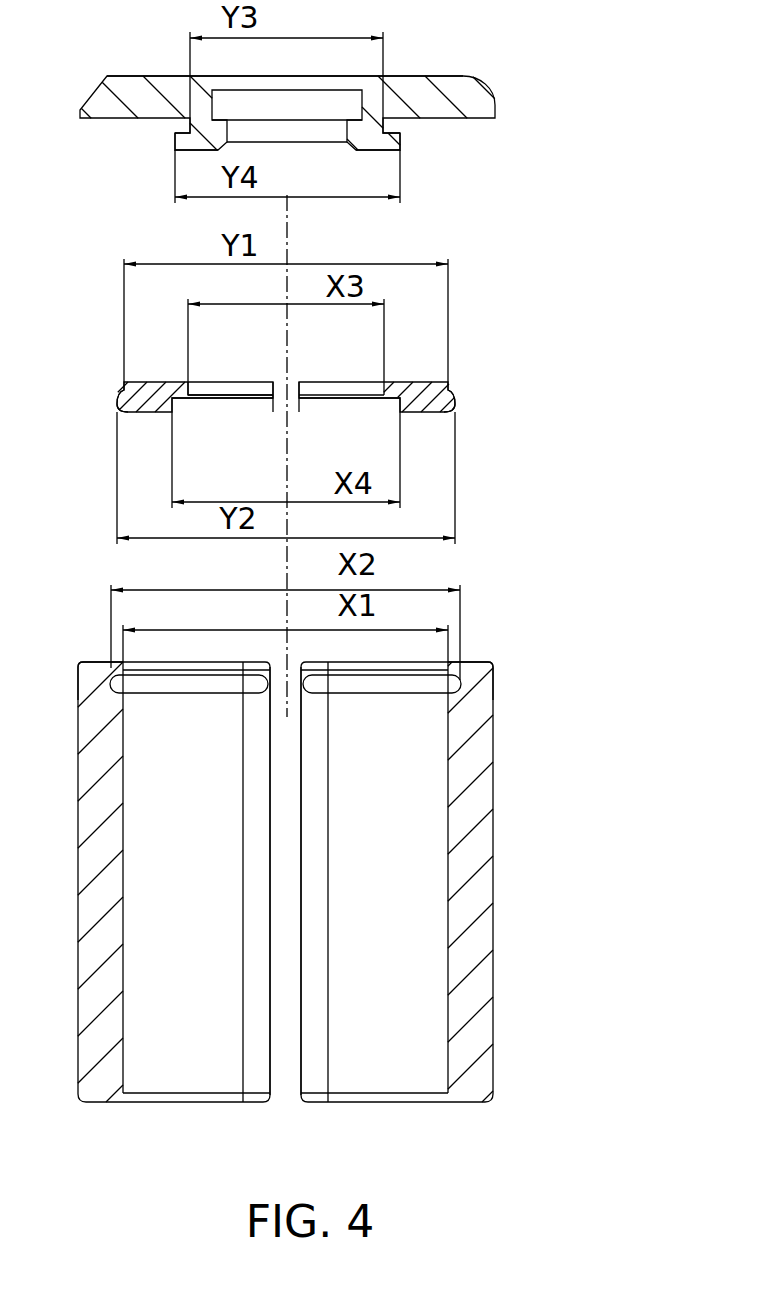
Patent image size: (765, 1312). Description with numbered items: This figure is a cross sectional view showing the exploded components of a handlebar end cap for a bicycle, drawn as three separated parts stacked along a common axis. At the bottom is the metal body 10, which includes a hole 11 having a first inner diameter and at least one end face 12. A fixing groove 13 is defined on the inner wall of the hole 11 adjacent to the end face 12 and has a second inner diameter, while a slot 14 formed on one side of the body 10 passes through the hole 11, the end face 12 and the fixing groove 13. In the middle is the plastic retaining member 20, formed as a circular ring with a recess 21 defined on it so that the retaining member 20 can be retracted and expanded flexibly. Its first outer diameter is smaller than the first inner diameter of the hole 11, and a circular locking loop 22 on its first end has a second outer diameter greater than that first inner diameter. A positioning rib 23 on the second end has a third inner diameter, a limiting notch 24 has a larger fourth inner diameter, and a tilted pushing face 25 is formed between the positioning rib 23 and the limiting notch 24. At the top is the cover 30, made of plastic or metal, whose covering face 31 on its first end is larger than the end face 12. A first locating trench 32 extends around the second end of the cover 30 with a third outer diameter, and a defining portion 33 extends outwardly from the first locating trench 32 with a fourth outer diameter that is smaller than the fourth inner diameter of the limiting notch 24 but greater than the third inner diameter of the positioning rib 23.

The body 10 is at (508, 752).
The hole 11 is at (450, 670).
The end face 12 is at (103, 662).
The fixing groove 13 is at (465, 685).
The slot 14 is at (283, 903).
The retaining member 20 is at (481, 384).
The recess 21 is at (283, 400).
The locking loop 22 is at (455, 400).
The positioning rib 23 is at (188, 390).
The limiting notch 24 is at (173, 408).
The tilted pushing face 25 is at (388, 398).
The cover 30 is at (508, 70).
The covering face 31 is at (140, 85).
The first locating trench 32 is at (187, 125).
The defining portion 33 is at (175, 143).